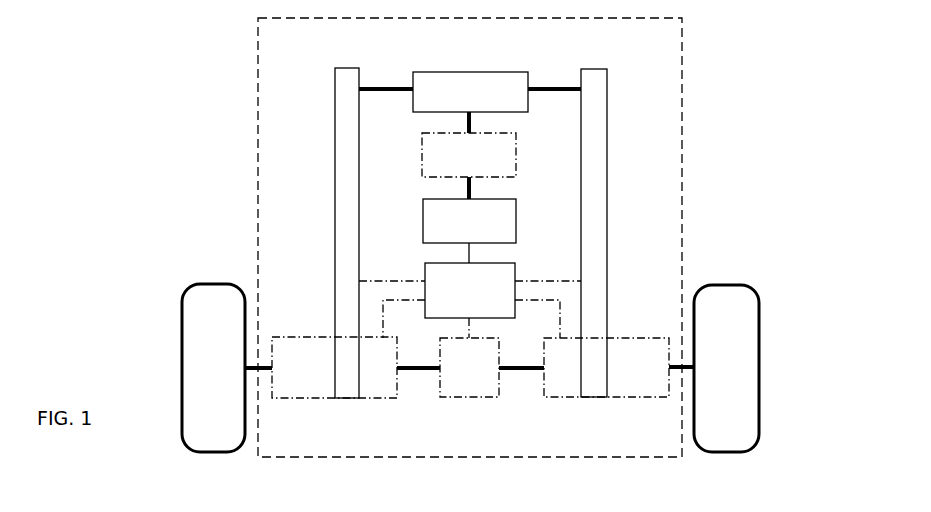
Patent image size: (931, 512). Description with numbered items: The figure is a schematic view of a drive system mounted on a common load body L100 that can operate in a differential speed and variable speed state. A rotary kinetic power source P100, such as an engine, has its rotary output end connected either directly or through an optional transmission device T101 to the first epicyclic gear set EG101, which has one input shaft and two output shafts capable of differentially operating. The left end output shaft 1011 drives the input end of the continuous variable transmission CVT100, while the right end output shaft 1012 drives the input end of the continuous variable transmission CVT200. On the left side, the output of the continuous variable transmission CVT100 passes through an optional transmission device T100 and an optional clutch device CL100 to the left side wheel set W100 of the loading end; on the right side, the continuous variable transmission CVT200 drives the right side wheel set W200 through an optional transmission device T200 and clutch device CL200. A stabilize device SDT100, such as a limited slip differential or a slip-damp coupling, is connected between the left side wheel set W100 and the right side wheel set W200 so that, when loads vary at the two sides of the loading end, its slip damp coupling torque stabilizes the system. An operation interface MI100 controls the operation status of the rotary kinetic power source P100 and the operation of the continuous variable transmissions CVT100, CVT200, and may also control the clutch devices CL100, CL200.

The common load body L100 is at (257, 190).
The continuous variable transmission CVT100 is at (335, 118).
The continuous variable transmission CVT200 is at (607, 188).
The first epicyclic gear set EG101 is at (470, 92).
The left end output shaft 1011 is at (385, 88).
The right end output shaft 1012 is at (535, 88).
The transmission device T101 is at (469, 155).
The rotary kinetic power source P100 is at (469, 221).
The operation interface MI100 is at (470, 290).
The transmission device T100 is at (298, 355).
The transmission device T200 is at (645, 355).
The clutch device CL100 is at (375, 378).
The stabilize device SDT100 is at (470, 387).
The clutch device CL200 is at (565, 377).
The left side wheel set W100 is at (196, 392).
The right side wheel set W200 is at (745, 392).